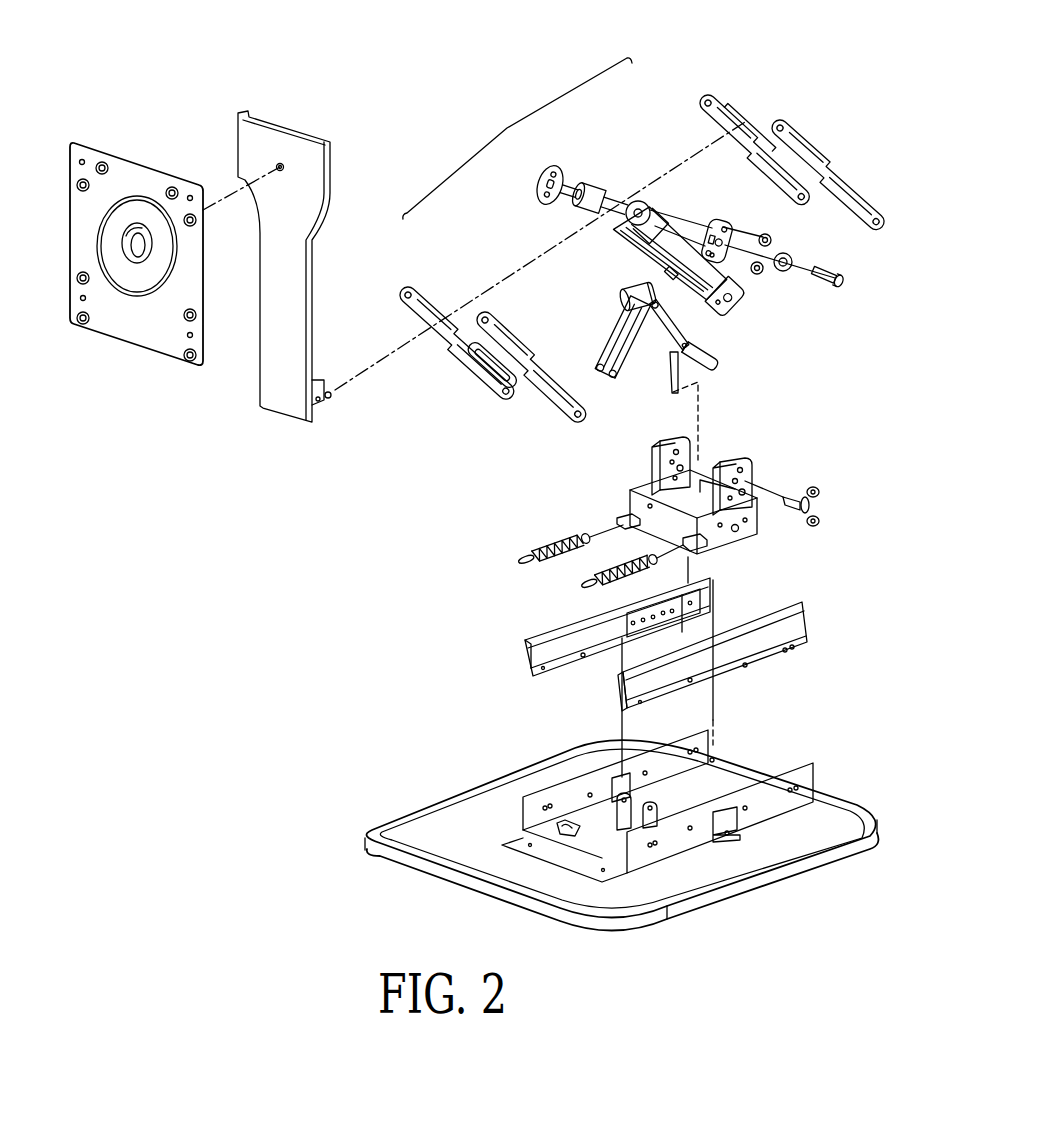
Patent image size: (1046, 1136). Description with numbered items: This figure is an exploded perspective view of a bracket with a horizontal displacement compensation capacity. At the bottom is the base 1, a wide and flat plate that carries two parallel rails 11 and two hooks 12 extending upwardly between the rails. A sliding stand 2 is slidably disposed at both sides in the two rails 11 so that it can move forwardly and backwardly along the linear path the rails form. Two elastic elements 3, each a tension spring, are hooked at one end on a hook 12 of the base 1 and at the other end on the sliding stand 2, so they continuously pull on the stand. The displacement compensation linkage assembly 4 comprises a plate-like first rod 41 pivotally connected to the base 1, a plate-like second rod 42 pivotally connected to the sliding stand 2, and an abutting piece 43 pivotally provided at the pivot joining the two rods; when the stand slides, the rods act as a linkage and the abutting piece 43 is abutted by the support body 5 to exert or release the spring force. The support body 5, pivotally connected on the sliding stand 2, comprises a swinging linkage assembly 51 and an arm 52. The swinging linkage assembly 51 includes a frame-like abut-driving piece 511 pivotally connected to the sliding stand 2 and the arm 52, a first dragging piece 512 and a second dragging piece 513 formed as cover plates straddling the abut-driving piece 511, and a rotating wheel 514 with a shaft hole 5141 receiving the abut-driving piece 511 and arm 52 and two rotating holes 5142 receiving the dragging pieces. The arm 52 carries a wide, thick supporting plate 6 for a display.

The base 1 is at (621, 821).
The rails 11 is at (805, 623).
The hooks 12 is at (557, 828).
The sliding stand 2 is at (757, 546).
The elastic element 3 is at (522, 538).
The displacement compensation linkage assembly 4 is at (683, 361).
The first rod 41 is at (638, 352).
The second rod 42 is at (680, 357).
The abutting piece 43 is at (610, 302).
The support body 5 is at (492, 66).
The swinging linkage assembly 51 is at (642, 242).
The abut-driving piece 511 is at (620, 197).
The first dragging piece 512 is at (458, 318).
The second dragging piece 513 is at (720, 110).
The rotating wheel 514 is at (712, 222).
The shaft hole 5141 is at (727, 253).
The rotating holes 5142 is at (730, 226).
The arm 52 is at (318, 172).
The supporting plate 6 is at (147, 146).